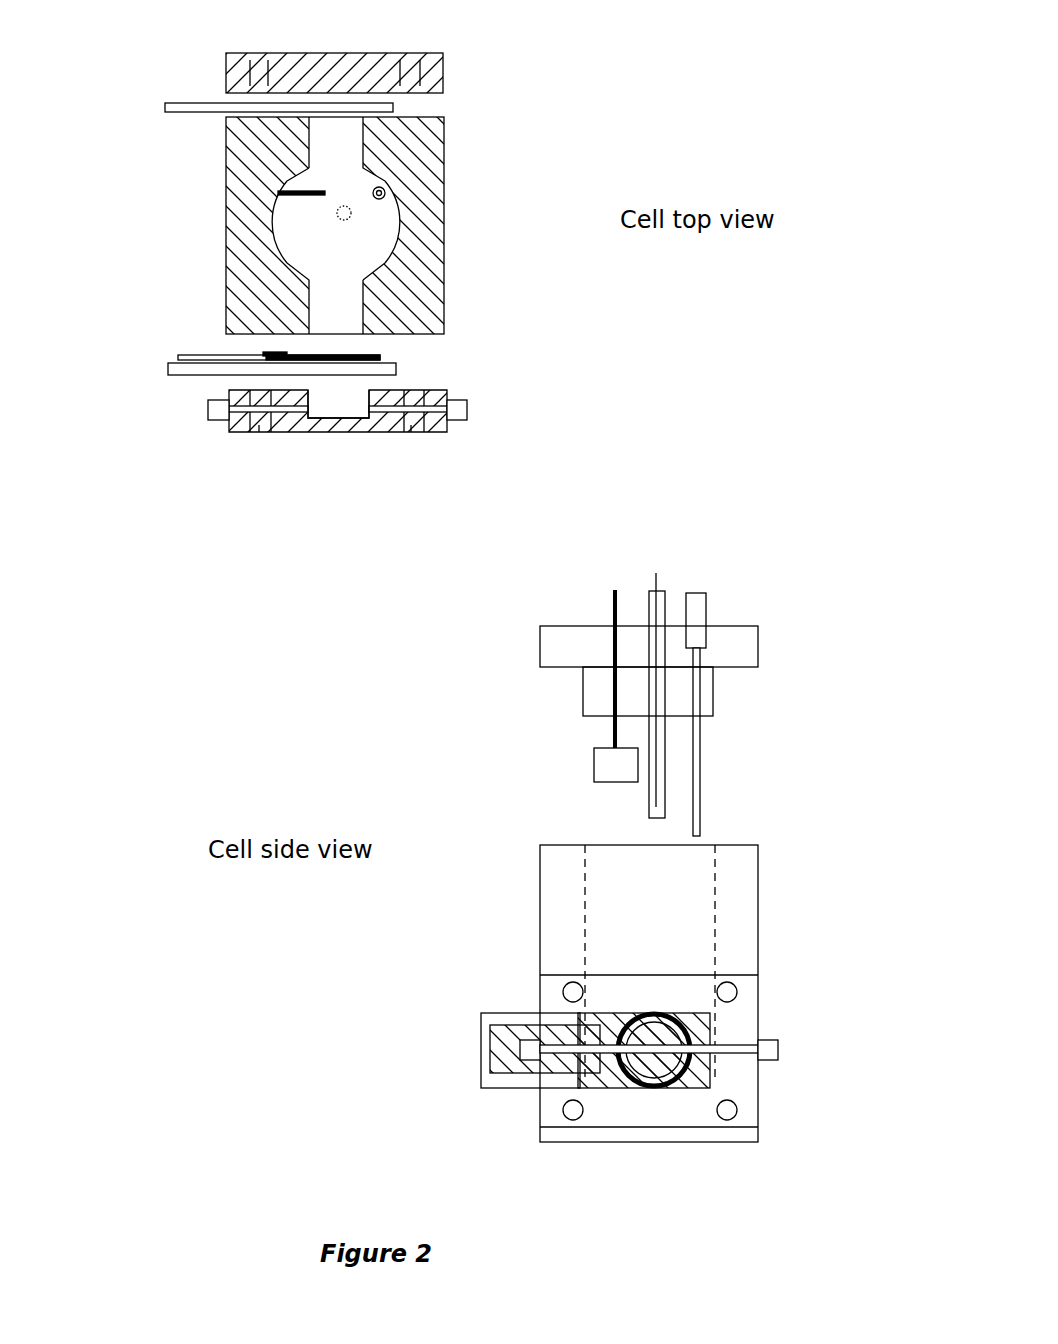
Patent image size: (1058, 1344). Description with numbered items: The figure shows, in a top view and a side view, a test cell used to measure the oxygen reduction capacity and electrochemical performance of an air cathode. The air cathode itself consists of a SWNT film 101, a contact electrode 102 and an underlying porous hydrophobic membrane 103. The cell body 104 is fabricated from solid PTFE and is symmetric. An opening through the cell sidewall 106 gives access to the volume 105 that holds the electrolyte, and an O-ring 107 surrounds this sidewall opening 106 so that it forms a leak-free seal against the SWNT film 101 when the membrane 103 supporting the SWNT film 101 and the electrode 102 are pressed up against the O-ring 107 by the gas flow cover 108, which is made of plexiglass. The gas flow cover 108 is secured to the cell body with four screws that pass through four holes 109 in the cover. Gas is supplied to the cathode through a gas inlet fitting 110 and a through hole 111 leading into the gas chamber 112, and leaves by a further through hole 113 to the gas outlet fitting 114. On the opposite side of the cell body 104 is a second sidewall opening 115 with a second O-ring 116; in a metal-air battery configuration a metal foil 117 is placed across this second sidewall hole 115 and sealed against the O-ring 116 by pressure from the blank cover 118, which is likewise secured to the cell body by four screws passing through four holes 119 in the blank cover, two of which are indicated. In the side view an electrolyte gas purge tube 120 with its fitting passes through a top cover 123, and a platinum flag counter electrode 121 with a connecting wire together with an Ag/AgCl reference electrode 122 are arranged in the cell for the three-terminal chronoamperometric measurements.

The SWNT film 101 is at (384, 357).
The contact electrode 102 is at (195, 355).
The porous hydrophobic membrane 103 is at (188, 375).
The cell body 104 is at (228, 312).
The volume for electrolyte 105 is at (290, 228).
The sidewall opening 106 is at (352, 306).
The O-ring 107 is at (370, 332).
The gas flow cover 108 is at (362, 433).
The holes 109 is at (259, 433).
The gas inlet fitting 110 is at (207, 410).
The through hole 111 is at (287, 412).
The gas chamber 112 is at (324, 418).
The through hole 113 is at (388, 412).
The gas outlet fitting 114 is at (468, 410).
The second sidewall opening 115 is at (340, 140).
The second O-ring 116 is at (305, 118).
The metal foil 117 is at (180, 103).
The blank cover 118 is at (437, 66).
The holes 119 is at (259, 52).
The electrolyte gas purge tube 120 is at (387, 190).
The platinum flag counter electrode 121 is at (278, 193).
The Ag/AgCl reference electrode 122 is at (354, 213).
The top cover 123 is at (582, 688).